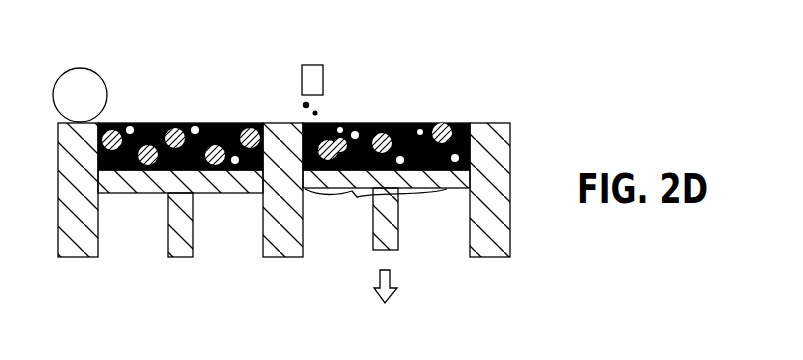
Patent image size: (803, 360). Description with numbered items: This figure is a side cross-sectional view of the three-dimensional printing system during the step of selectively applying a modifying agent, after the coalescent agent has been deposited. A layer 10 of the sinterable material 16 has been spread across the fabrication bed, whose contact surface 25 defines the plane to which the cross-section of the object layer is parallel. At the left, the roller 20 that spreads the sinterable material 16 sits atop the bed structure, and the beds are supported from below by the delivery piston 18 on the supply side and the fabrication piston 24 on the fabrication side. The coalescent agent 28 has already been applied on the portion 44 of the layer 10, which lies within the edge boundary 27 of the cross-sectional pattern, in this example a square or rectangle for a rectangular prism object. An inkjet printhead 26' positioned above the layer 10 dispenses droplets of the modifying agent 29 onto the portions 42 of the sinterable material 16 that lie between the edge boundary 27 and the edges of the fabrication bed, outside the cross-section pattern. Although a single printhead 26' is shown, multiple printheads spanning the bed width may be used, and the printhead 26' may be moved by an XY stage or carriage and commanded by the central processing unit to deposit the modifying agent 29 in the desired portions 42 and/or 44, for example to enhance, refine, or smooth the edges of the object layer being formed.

The layer 10 is at (446, 93).
The sinterable material 16 is at (177, 122).
The delivery piston 18 is at (177, 245).
The roller 20 is at (82, 97).
The fabrication piston 24 is at (387, 237).
The contact surface 25 is at (472, 160).
The inkjet printhead 26' is at (348, 65).
The edge boundary 27 is at (339, 122).
The coalescent agent 28 is at (418, 122).
The modifying agent 29 is at (302, 103).
The portions 42 is at (462, 111).
The portion 44 is at (356, 197).